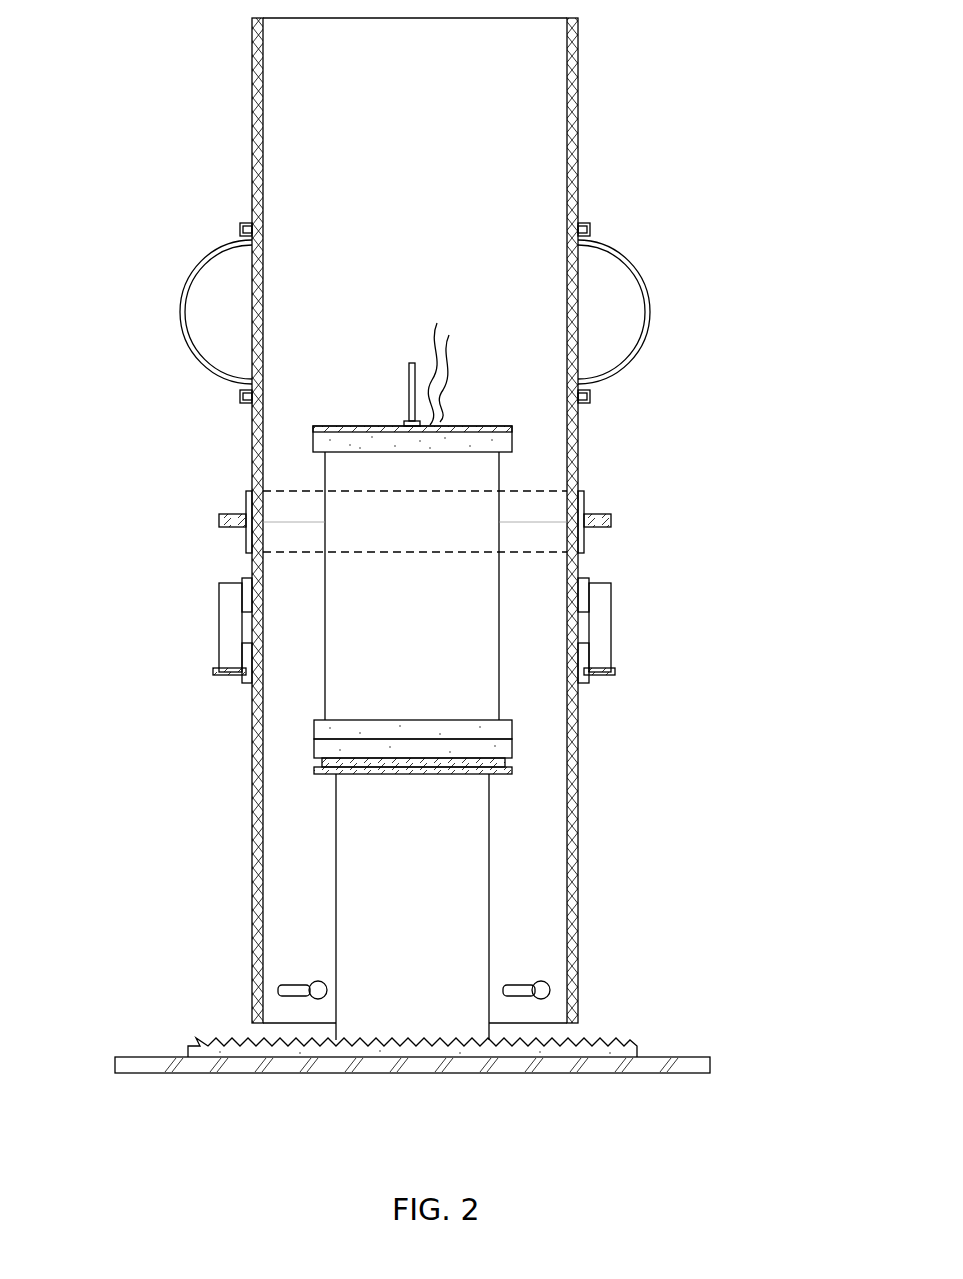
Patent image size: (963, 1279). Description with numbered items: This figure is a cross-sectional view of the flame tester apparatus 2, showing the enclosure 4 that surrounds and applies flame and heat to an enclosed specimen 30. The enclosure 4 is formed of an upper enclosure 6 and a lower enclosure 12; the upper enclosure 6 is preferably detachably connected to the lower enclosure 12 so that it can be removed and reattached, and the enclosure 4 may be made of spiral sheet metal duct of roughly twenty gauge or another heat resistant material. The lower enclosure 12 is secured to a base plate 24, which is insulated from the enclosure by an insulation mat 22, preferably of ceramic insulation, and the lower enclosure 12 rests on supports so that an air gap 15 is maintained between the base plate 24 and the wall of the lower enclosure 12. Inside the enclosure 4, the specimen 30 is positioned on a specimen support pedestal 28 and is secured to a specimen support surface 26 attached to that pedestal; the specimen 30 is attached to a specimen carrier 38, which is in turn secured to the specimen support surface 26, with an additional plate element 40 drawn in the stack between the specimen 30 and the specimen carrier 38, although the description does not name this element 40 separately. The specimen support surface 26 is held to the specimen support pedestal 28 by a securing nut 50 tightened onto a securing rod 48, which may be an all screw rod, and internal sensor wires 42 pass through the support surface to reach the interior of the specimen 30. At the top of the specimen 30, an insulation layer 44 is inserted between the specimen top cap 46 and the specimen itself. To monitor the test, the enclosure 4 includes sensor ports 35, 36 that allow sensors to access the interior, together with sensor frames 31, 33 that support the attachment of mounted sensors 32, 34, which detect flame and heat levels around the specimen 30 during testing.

The flame tester apparatus 2 is at (228, 38).
The enclosure 4 is at (577, 47).
The upper enclosure 6 is at (571, 157).
The lower enclosure 12 is at (257, 978).
The air gap 15 is at (256, 1028).
The insulation mat 22 is at (620, 1050).
The base plate 24 is at (700, 1068).
The specimen support surface 26 is at (505, 773).
The specimen support pedestal 28 is at (358, 917).
The specimen 30 is at (474, 470).
The sensor frame 31 is at (238, 675).
The mounted sensor 32 is at (232, 615).
The sensor frame 33 is at (586, 667).
The mounted sensor 34 is at (604, 632).
The sensor port 35 is at (243, 622).
The sensor port 36 is at (575, 608).
The specimen carrier 38 is at (325, 760).
The plate 40 is at (332, 726).
The internal sensor wires 42 is at (443, 370).
The insulation layer 44 is at (313, 432).
The specimen top cap 46 is at (335, 424).
The securing rod 48 is at (409, 421).
The securing nut 50 is at (405, 424).